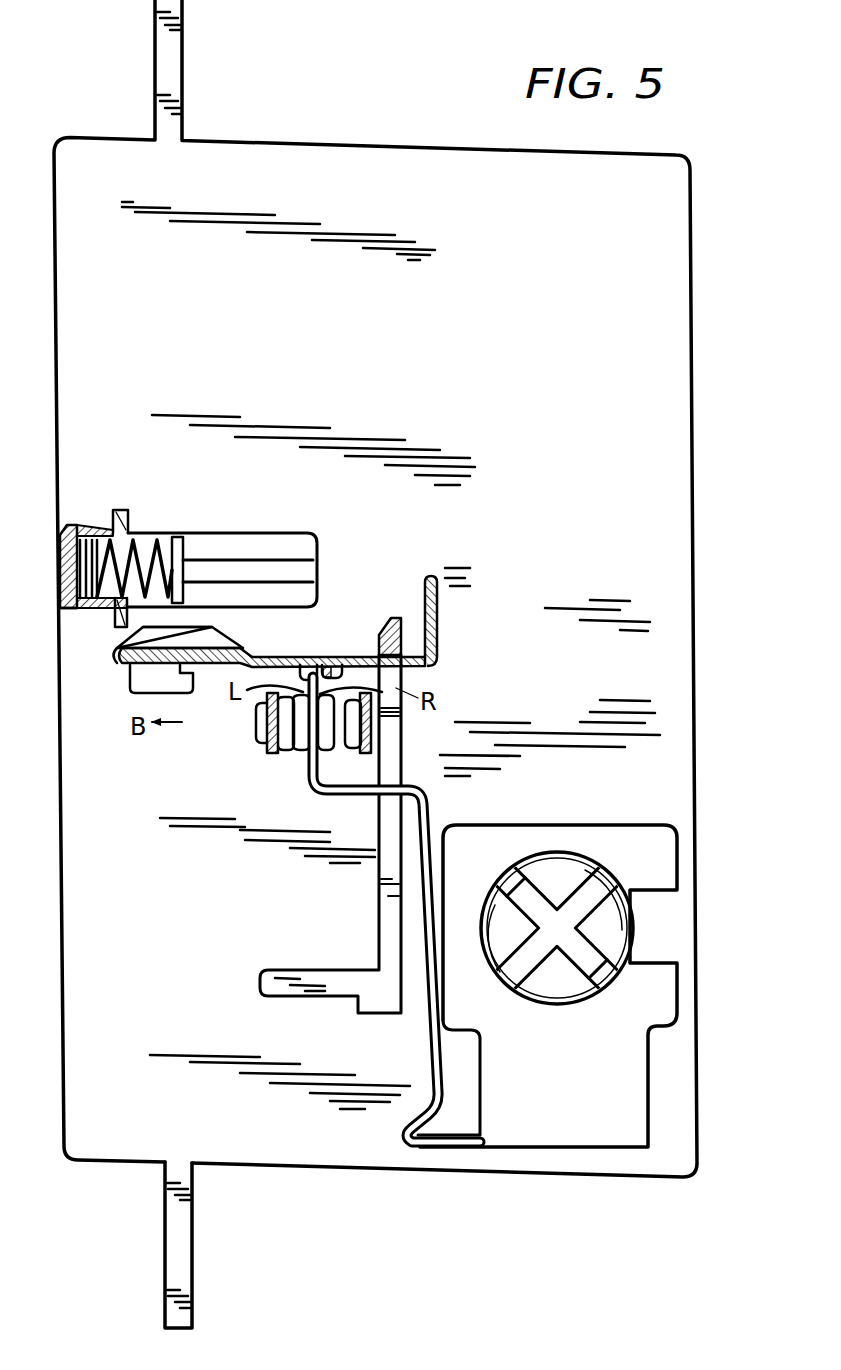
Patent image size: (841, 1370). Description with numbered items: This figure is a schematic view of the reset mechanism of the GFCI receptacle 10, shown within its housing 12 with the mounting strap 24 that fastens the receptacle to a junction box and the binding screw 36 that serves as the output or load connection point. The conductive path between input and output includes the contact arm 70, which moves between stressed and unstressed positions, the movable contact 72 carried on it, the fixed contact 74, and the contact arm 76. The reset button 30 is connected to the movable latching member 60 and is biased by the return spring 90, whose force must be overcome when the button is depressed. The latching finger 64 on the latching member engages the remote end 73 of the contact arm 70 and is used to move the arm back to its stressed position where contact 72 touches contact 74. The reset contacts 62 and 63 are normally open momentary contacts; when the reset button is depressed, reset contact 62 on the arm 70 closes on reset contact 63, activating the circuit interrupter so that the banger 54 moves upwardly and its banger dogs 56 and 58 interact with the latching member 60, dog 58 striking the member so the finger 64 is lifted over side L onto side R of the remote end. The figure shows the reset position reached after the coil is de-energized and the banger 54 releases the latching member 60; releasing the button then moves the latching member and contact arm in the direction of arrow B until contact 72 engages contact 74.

The GFCI receptacle 10 is at (730, 690).
The housing 12 is at (698, 580).
The mounting strap 24 is at (192, 1240).
The reset button 30 is at (60, 580).
The binding screw 36 is at (572, 970).
The banger 54 is at (380, 890).
The banger dog 56 is at (390, 620).
The banger dog 58 is at (402, 712).
The movable latching member 60 is at (438, 612).
The reset contact 62 is at (323, 757).
The reset contact 63 is at (351, 755).
The latching finger 64 is at (342, 663).
The contact arm 70 is at (428, 806).
The movable contact 72 is at (305, 757).
The remote end 73 is at (305, 662).
The fixed contact 74 is at (284, 756).
The contact arm 76 is at (250, 690).
The return spring 90 is at (62, 608).